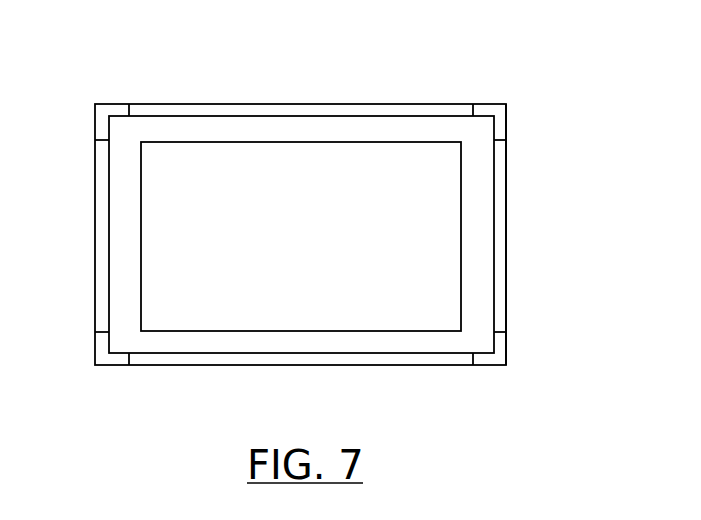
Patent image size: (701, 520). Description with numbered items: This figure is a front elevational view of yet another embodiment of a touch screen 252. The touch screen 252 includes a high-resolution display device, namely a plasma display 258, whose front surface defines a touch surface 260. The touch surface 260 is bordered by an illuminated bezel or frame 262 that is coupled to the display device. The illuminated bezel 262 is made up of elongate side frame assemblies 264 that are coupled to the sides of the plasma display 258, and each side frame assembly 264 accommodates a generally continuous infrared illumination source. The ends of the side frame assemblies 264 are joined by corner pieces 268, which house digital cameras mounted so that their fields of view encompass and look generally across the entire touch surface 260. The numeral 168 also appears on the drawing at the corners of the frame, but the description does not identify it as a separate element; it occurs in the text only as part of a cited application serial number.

The touch screen 252 is at (486, 80).
The illuminated bezel 262 is at (514, 216).
The side frame assembly 264 is at (238, 126).
The plasma display 258 is at (380, 180).
The touch surface 260 is at (327, 238).
The corner bracket 168 is at (102, 117).
The corner piece 268 is at (503, 119).